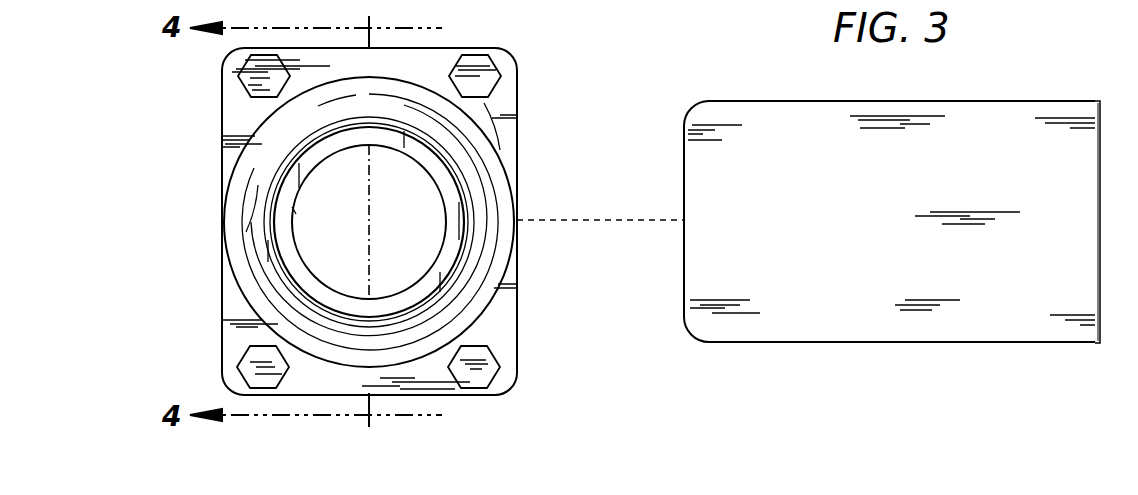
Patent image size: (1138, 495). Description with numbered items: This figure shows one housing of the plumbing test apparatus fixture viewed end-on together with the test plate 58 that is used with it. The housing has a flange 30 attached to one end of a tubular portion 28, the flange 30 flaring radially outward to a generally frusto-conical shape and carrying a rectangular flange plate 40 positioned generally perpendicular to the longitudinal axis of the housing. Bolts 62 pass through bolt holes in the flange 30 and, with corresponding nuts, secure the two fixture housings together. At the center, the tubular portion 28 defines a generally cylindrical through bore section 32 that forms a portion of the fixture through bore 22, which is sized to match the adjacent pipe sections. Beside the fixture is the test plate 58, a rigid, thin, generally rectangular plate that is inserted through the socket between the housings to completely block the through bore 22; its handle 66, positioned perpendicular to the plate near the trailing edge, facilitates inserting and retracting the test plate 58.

The through bore 22 is at (408, 226).
The tubular portion 28 is at (432, 282).
The flange 30 is at (485, 191).
The through bore section 32 is at (292, 229).
The flange plate 40 is at (510, 103).
The test plate 58 is at (782, 115).
The bolt 62 is at (483, 62).
The handle 66 is at (1100, 101).